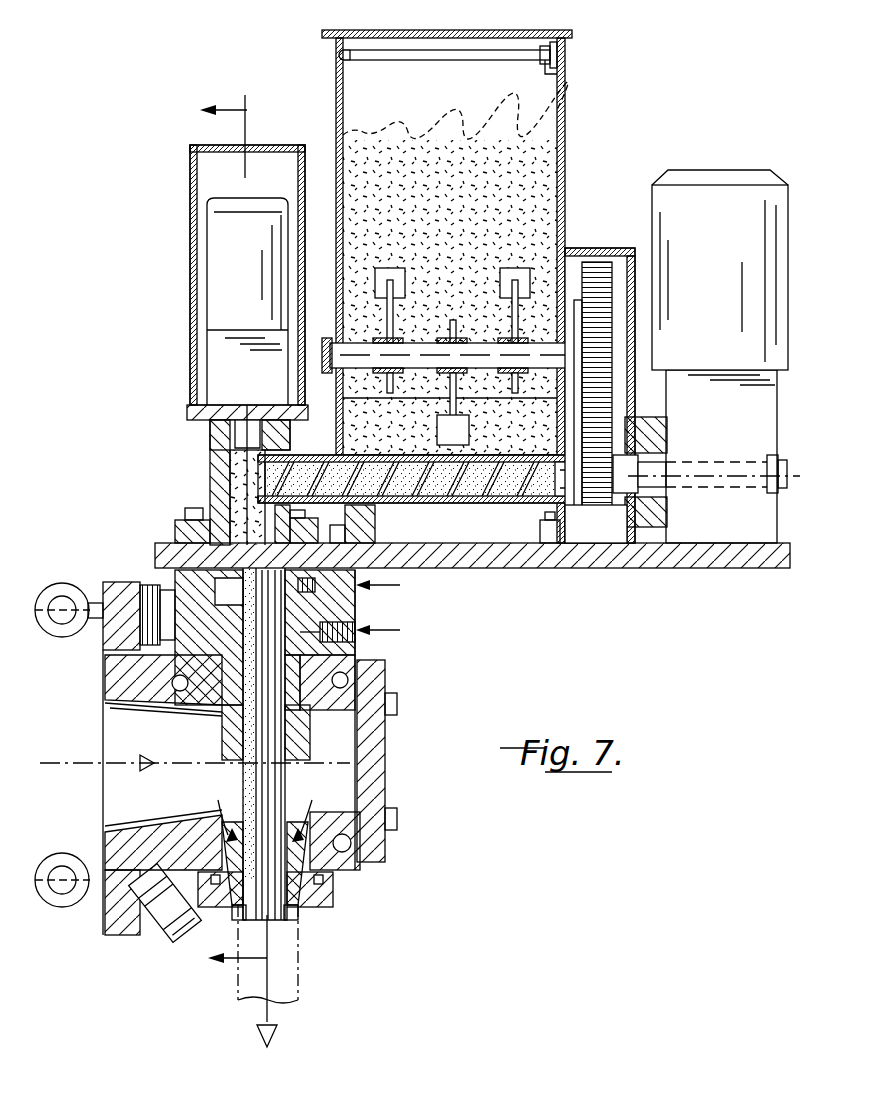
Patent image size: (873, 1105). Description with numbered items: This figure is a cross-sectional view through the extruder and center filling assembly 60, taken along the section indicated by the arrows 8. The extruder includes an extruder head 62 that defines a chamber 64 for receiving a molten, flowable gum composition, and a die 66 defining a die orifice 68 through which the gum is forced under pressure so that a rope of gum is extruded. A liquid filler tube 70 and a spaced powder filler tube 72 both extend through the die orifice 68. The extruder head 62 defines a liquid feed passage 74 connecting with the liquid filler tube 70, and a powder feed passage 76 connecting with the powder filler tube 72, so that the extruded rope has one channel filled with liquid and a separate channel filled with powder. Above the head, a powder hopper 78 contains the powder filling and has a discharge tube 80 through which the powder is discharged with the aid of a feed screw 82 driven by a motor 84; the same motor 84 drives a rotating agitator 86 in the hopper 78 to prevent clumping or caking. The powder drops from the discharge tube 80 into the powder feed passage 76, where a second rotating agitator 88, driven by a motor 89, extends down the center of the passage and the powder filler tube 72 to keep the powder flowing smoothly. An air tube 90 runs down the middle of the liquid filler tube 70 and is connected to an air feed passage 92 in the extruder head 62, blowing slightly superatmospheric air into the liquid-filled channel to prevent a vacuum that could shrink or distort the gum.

The section line 8- 8 is at (249, 573).
The extruder and center filling assembly 60 is at (632, 67).
The extruder head 62 is at (117, 585).
The chamber 64 is at (160, 722).
The die 66 is at (300, 862).
The die orifice 68 is at (226, 910).
The liquid filler tube 70 is at (288, 785).
The powder filler tube 72 is at (244, 785).
The liquid feed passage 74 is at (352, 637).
The powder feed passage 76 is at (230, 580).
The powder hopper 78 is at (560, 126).
The discharge tube 80 is at (300, 440).
The feed screw 82 is at (432, 466).
The motor 84 is at (729, 168).
The rotating agitator 86 is at (434, 296).
The rotating agitator 88 is at (238, 470).
The motor 89 is at (220, 246).
The air tube 90 is at (287, 906).
The air feed passage 92 is at (330, 590).